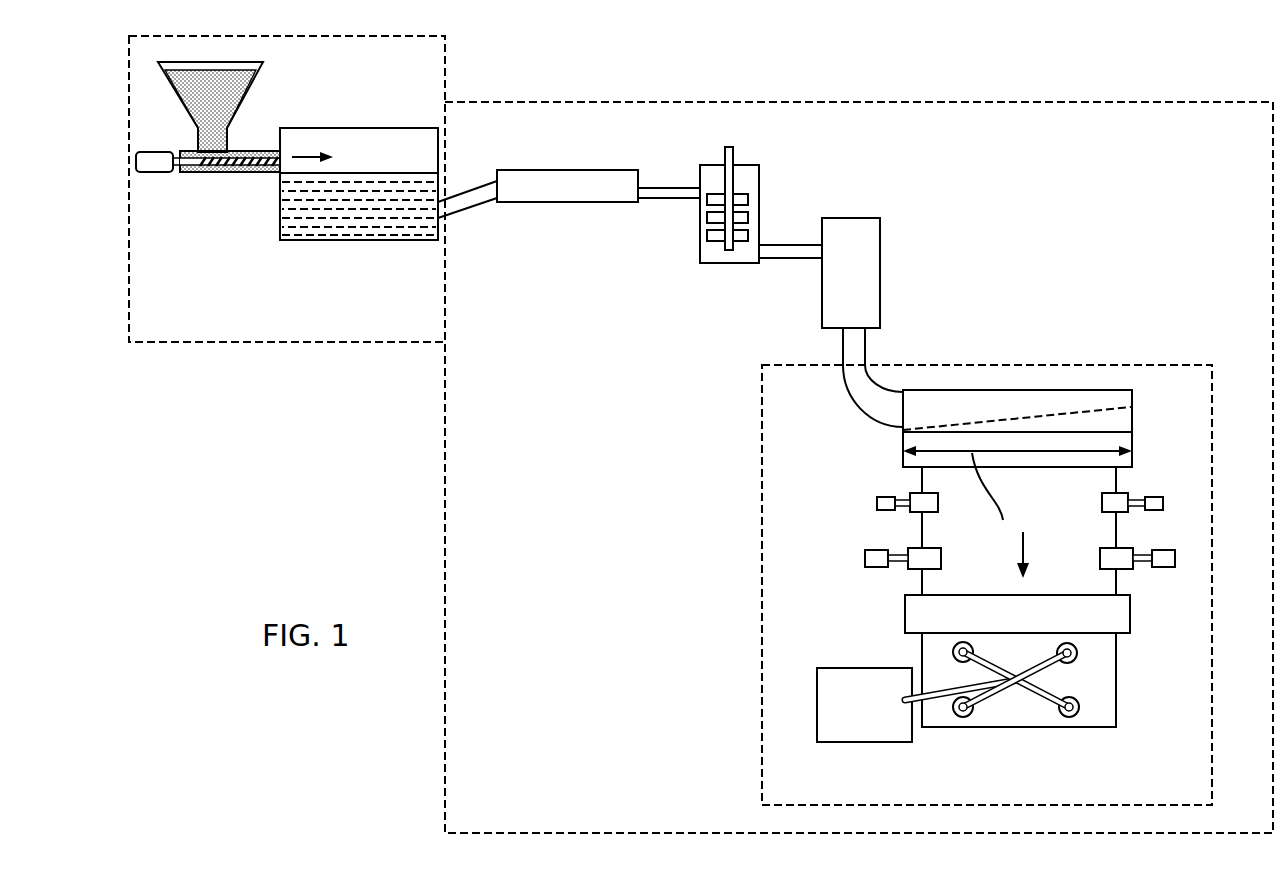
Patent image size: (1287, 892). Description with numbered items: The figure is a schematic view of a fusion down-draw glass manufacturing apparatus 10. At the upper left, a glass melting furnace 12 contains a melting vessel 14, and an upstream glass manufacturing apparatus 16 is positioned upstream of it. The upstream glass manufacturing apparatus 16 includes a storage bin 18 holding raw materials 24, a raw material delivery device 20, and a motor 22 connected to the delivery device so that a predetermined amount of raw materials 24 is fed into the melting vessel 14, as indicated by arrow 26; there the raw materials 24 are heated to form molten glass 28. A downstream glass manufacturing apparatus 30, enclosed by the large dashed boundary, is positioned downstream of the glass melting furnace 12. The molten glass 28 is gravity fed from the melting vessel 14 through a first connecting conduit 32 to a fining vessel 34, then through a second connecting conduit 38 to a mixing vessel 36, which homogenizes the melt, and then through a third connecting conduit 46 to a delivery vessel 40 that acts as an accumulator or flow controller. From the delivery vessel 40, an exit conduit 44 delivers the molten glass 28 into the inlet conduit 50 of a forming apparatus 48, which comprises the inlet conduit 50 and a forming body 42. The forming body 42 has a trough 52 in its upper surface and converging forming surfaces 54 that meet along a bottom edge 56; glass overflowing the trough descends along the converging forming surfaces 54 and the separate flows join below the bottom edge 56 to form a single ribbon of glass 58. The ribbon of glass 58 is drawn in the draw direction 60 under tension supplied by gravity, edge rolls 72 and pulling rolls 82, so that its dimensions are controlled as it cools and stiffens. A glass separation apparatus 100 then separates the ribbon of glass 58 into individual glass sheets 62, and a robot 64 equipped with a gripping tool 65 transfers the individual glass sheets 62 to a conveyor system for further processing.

The glass manufacturing apparatus 10 is at (367, 405).
The glass melting furnace 12 is at (293, 342).
The melting vessel 14 is at (327, 128).
The upstream glass manufacturing apparatus 16 is at (180, 196).
The storage bin 18 is at (253, 85).
The raw material delivery device 20 is at (247, 173).
The motor 22 is at (140, 151).
The raw materials 24 is at (220, 102).
The arrow 26 is at (305, 156).
The molten glass 28 is at (308, 230).
The downstream glass manufacturing apparatus 30 is at (707, 102).
The first connecting conduit 32 is at (457, 212).
The fining vessel 34 is at (552, 203).
The mixing vessel 36 is at (698, 243).
The second connecting conduit 38 is at (668, 200).
The delivery vessel 40 is at (822, 305).
The forming body 42 is at (1133, 425).
The exit conduit 44 is at (867, 345).
The third connecting conduit 46 is at (788, 263).
The forming apparatus 48 is at (1027, 363).
The inlet conduit 50 is at (863, 412).
The trough 52 is at (1067, 408).
The converging forming surfaces 54 is at (902, 460).
The bottom edge 56 is at (1123, 467).
The ribbon of glass 58 is at (920, 515).
The draw direction 60 is at (1036, 551).
The individual glass sheets 62 is at (1118, 677).
The robot 64 is at (837, 670).
The gripping tool 65 is at (1038, 697).
The edge rolls 72 is at (938, 502).
The pulling rolls 82 is at (941, 558).
The glass separation apparatus 100 is at (1133, 603).